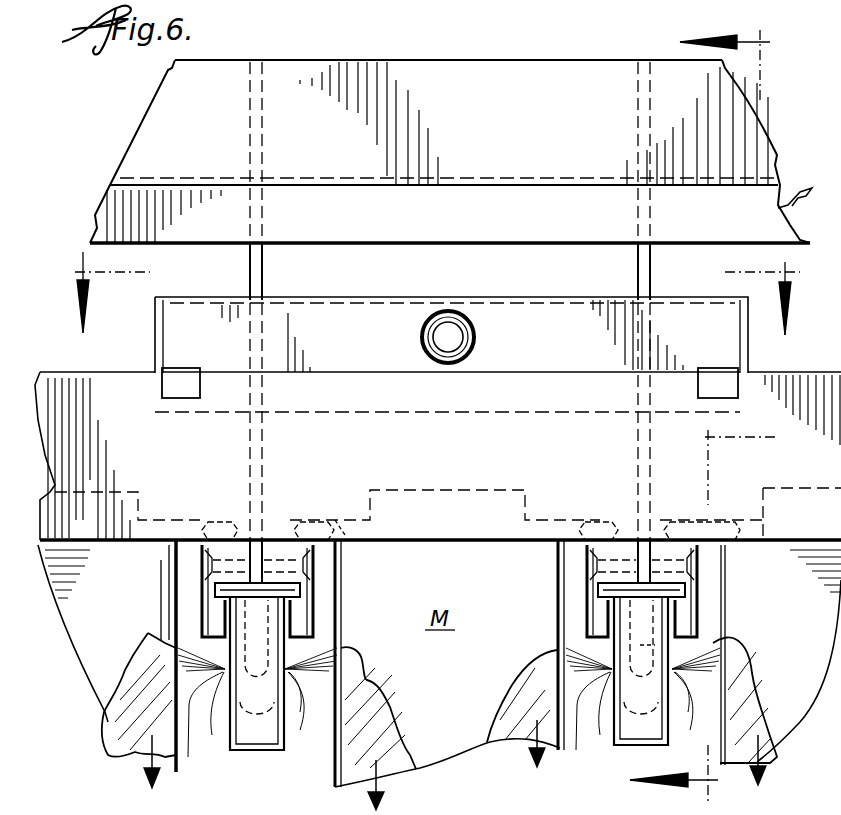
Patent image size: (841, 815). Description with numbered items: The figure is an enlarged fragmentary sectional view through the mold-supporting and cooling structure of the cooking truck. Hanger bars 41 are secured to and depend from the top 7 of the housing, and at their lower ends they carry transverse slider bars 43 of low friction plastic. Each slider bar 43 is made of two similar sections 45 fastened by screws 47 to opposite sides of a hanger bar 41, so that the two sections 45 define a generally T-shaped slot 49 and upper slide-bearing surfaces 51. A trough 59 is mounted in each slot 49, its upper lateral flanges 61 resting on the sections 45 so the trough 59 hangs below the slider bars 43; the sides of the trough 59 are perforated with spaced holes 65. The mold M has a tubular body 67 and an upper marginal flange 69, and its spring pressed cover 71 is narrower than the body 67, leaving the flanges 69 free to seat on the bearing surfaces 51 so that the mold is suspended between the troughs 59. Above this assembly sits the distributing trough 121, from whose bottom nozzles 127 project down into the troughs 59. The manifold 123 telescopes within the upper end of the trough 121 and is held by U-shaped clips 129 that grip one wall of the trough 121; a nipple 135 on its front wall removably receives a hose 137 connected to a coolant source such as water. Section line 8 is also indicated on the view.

The top 7 is at (428, 261).
The section line 8- 8 is at (702, 411).
The hanger bars 41 is at (263, 283).
The slider bars 43 is at (196, 610).
The slider bar sections 45 is at (205, 597).
The screws 47 is at (320, 560).
The T-shaped slot 49 is at (296, 605).
The slide-bearing surfaces 51 is at (212, 520).
The troughs 59 is at (262, 745).
The upper lateral flanges 61 is at (686, 592).
The holes 65 is at (439, 707).
The tubular body 67 is at (335, 772).
The upper marginal flange 69 is at (345, 520).
The spring pressed cover 71 is at (122, 458).
The distributing trough 121 is at (36, 392).
The manifold 123 is at (398, 268).
The nozzles 127 is at (655, 648).
The U-shaped ears or clips 129 is at (180, 383).
The nipple 135 is at (448, 322).
The hose 137 is at (474, 333).